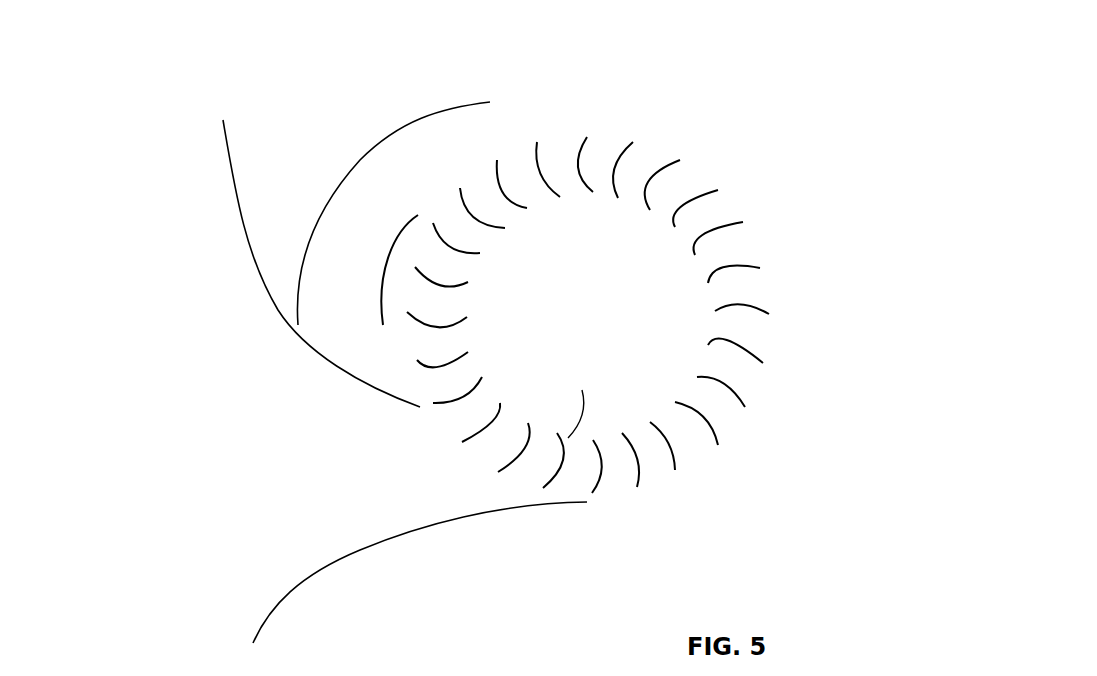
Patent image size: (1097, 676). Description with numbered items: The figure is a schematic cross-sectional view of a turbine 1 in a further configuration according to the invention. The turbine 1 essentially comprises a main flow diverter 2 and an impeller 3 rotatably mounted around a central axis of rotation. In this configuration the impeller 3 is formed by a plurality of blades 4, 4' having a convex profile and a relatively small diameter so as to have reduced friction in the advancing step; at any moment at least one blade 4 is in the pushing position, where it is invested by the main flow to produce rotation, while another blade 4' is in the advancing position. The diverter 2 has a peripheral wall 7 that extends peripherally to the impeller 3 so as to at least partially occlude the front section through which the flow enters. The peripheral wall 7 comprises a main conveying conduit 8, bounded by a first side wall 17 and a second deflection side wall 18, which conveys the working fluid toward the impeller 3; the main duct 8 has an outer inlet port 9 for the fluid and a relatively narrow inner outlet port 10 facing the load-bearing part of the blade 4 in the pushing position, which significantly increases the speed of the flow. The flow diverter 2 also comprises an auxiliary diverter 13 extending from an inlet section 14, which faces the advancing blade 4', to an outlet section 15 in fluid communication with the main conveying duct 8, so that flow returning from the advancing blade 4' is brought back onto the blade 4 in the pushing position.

The turbine 1 is at (813, 206).
The main flow diverter 2 is at (167, 183).
The impeller 3 is at (775, 401).
The blade 4 is at (508, 417).
The blade 4' is at (484, 317).
The peripheral wall 7 is at (279, 199).
The main conveying conduit 8 is at (337, 499).
The outer inlet port 9 is at (246, 558).
The inner outlet port 10 is at (518, 484).
The auxiliary diverter 13 is at (392, 167).
The inlet section 14 is at (486, 140).
The outlet section 15 is at (361, 328).
The first side wall 17 is at (336, 558).
The second deflection side wall 18 is at (236, 222).